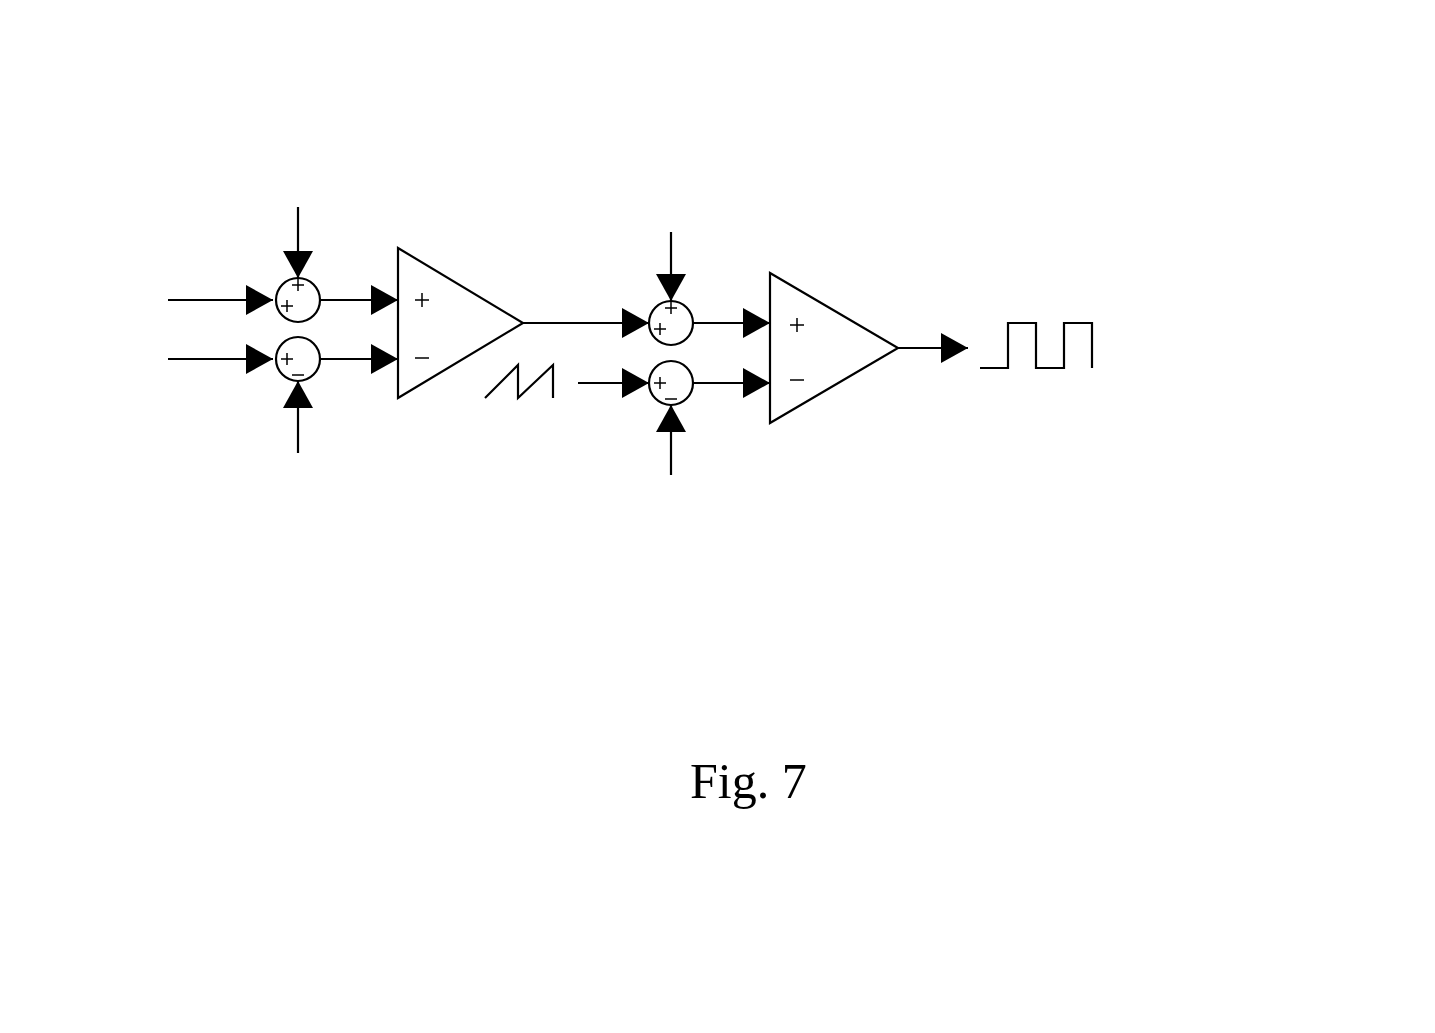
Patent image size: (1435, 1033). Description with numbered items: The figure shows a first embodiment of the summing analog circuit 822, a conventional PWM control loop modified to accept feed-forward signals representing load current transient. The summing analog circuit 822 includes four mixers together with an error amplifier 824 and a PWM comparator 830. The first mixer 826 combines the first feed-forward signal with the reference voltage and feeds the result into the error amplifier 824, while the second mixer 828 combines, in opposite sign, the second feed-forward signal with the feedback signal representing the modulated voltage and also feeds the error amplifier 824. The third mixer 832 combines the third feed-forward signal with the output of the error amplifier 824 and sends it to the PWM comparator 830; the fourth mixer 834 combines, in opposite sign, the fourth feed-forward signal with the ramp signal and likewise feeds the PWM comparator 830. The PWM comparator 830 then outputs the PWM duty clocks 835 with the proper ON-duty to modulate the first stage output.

The summing analog circuit 822 is at (748, 97).
The error amplifier 824 is at (459, 285).
The first mixer 826 is at (313, 283).
The second mixer 828 is at (281, 376).
The PWM comparator 830 is at (833, 305).
The third mixer 832 is at (687, 305).
The fourth mixer 834 is at (655, 398).
The PWM duty clocks 835 is at (920, 347).